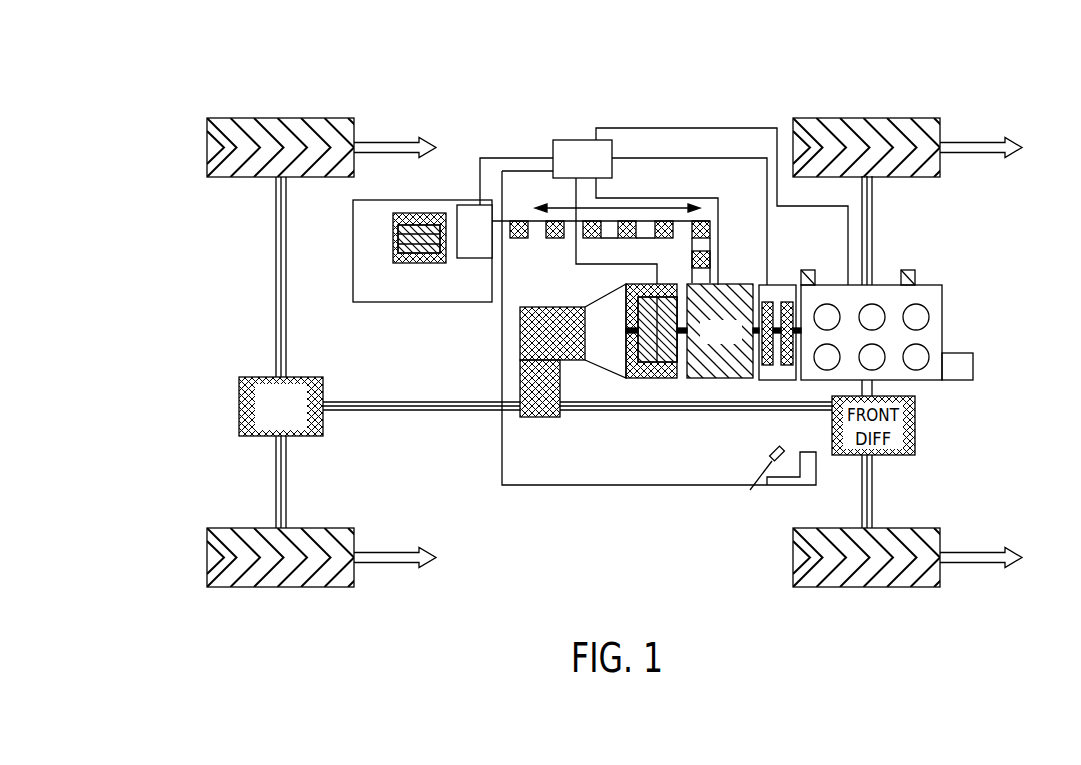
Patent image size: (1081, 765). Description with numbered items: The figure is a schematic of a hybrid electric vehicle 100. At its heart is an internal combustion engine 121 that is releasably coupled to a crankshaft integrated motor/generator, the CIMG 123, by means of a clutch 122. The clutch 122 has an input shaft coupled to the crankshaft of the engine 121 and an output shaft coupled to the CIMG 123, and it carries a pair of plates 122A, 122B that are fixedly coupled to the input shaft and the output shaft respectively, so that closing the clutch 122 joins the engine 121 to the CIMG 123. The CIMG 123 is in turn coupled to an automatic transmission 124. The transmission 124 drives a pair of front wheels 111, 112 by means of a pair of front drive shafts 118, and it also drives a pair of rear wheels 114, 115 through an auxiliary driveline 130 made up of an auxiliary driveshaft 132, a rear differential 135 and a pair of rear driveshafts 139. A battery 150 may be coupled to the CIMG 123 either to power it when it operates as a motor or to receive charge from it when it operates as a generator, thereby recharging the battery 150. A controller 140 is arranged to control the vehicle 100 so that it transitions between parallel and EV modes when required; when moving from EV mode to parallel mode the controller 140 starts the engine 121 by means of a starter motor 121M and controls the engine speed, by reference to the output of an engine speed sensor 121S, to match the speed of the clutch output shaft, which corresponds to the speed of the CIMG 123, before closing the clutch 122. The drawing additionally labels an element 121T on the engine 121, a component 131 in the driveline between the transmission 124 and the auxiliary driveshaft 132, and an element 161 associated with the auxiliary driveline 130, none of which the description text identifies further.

The hybrid electric vehicle 100 is at (993, 222).
The front wheel 111 is at (924, 118).
The front wheel 112 is at (937, 528).
The rear wheel 114 is at (338, 118).
The rear wheel 115 is at (337, 528).
The front drive shafts 118 is at (873, 216).
The internal combustion engine 121 is at (935, 303).
The engine speed sensor 121S is at (815, 277).
The engine torque sensor 121T is at (915, 277).
The starter motor 121M is at (973, 362).
The clutch 122 is at (777, 292).
The clutch plate 122A is at (789, 302).
The clutch plate 122B is at (767, 302).
The crankshaft integrated motor/generator (CIMG) 123 is at (690, 382).
The automatic transmission 124 is at (643, 382).
The auxiliary driveline 130 is at (418, 470).
The transfer case 131 is at (520, 332).
The auxiliary driveshaft 132 is at (415, 412).
The rear differential 135 is at (239, 404).
The rear driveshafts 139 is at (276, 291).
The controller 140 is at (577, 140).
The battery 150 is at (415, 304).
The switch 161 is at (761, 480).